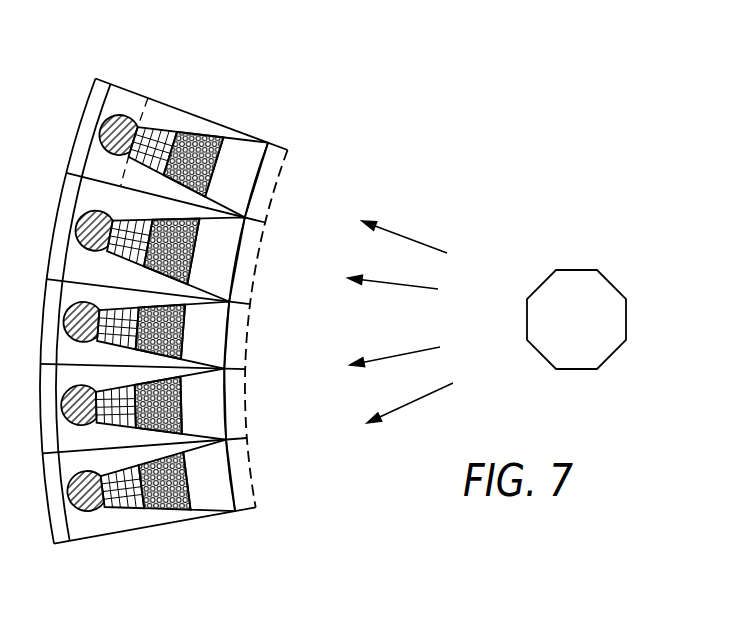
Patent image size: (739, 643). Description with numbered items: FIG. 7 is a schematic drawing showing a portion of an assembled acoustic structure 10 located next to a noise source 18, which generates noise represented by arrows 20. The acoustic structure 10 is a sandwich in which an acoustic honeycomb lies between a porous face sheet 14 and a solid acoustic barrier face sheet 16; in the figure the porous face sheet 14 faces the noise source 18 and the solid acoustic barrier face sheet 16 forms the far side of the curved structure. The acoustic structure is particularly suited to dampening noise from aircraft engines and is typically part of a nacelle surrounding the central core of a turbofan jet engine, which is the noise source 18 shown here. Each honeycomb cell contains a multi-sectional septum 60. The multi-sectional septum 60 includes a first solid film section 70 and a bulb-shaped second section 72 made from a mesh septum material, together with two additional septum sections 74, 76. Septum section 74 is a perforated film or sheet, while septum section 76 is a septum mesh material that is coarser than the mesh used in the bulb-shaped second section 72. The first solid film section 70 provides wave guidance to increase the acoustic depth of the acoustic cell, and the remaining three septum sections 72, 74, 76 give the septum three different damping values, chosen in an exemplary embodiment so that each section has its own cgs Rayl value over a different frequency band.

The acoustic structure 10 is at (343, 147).
The porous face sheet 14 is at (252, 463).
The solid acoustic barrier face sheet 16 is at (84, 112).
The noise source 18 is at (576, 319).
The arrows 20 is at (418, 242).
The multi-sectional septum 60 is at (153, 140).
The first solid film section 70 is at (212, 500).
The bulb-shaped second section 72 is at (80, 503).
The septum section 74 is at (165, 512).
The septum section 76 is at (125, 503).